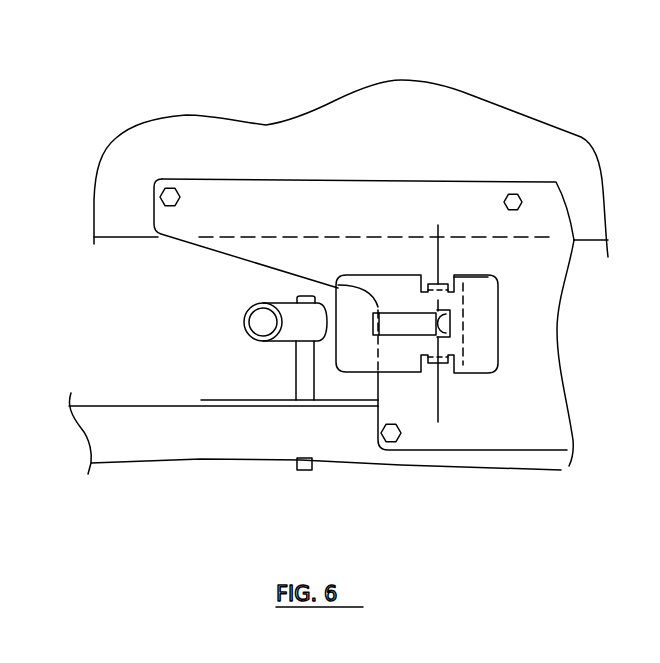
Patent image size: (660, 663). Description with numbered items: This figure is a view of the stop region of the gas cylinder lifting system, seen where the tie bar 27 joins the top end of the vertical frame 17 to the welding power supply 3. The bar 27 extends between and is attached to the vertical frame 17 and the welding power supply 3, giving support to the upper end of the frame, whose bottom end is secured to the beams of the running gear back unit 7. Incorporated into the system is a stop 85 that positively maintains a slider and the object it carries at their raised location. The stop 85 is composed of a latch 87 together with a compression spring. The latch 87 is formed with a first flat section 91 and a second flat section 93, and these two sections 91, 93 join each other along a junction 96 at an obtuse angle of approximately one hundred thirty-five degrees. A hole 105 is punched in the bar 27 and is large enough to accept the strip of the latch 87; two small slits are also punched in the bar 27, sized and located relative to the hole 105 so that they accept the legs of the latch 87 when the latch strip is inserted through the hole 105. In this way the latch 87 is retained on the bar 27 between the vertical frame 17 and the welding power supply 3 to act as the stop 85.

The welding power supply 3 is at (530, 132).
The tie bar 27 is at (322, 200).
The stop 85 is at (512, 356).
The junction 96 is at (500, 293).
The latch 87 is at (518, 316).
The hole 105 is at (450, 328).
The second flat section 93 is at (487, 357).
The first flat section 91 is at (352, 353).
The vertical frame 17 is at (106, 478).
The running gear back unit 7 is at (484, 422).